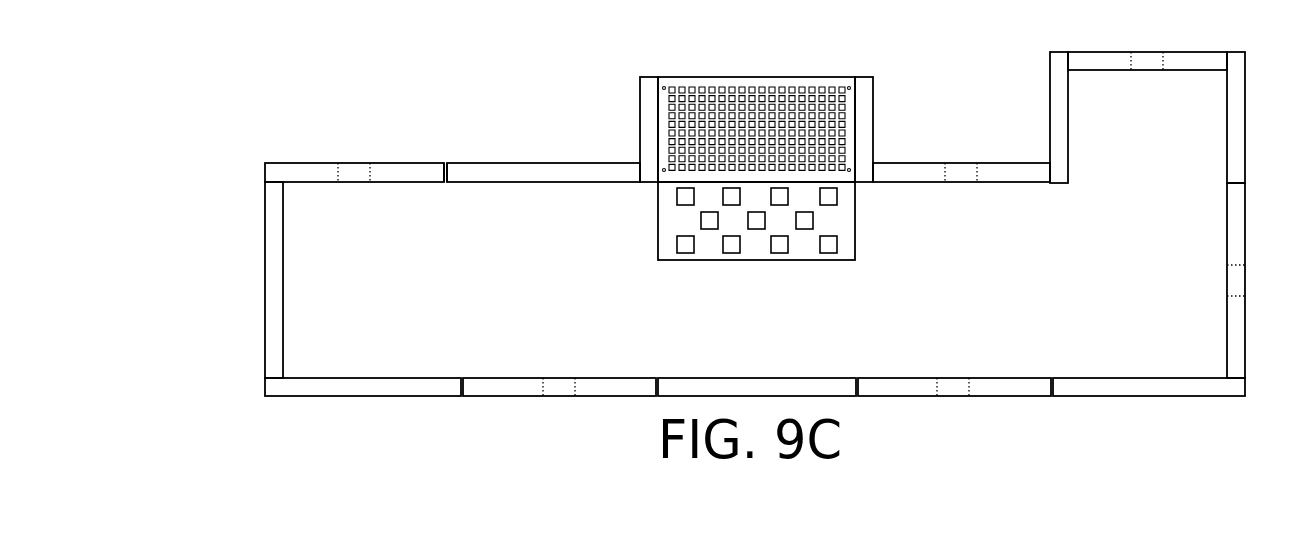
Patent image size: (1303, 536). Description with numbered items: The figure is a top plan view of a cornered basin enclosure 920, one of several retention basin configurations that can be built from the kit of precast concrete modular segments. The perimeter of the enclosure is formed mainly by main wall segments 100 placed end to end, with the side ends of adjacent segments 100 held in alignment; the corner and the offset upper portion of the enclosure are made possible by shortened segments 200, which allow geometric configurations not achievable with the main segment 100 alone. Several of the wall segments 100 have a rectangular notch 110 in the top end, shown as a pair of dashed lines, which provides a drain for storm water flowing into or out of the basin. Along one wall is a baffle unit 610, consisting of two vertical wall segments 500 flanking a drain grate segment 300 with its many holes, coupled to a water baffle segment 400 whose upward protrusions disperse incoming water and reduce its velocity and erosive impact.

The main wall segment 100 is at (311, 163).
The rectangular notch 110 is at (362, 163).
The shortened segment 200 is at (1068, 112).
The drain grate segment 300 is at (760, 77).
The water baffle segment 400 is at (776, 260).
The vertical wall segment 500 is at (640, 119).
The baffle unit 610 is at (797, 77).
The cornered basin enclosure 920 is at (434, 156).